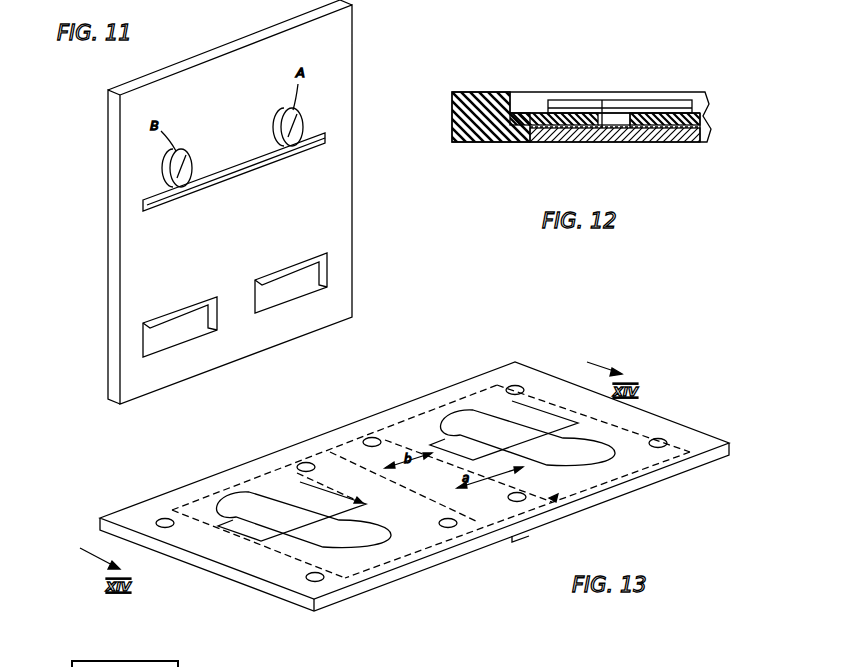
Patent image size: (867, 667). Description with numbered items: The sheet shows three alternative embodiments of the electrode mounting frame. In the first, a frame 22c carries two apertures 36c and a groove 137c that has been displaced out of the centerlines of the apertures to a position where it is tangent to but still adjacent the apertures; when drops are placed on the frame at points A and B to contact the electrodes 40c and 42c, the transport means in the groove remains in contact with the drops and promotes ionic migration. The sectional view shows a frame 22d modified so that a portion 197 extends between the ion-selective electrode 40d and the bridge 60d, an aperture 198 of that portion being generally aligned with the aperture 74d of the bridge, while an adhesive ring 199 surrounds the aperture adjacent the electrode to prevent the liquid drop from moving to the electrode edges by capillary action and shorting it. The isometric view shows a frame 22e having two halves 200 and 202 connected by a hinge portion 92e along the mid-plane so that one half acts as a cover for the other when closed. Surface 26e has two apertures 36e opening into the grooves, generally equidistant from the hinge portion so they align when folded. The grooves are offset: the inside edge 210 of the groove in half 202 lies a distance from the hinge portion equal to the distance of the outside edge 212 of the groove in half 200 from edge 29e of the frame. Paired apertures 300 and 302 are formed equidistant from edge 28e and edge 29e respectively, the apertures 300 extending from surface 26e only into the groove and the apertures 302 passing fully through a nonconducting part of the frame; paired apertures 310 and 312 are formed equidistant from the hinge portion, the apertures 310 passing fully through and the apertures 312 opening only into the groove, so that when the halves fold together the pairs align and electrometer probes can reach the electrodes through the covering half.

In FIG. 11, the frame 22c is at (126, 257).
In FIG. 11, the apertures 36c is at (275, 128).
In FIG. 11, the groove 137c is at (238, 168).
In FIG. 11, the electrode 40c is at (293, 285).
In FIG. 11, the electrode 42c is at (173, 328).
In FIG. 12, the frame 22d is at (575, 62).
In FIG. 12, the aperture 74d is at (630, 126).
In FIG. 12, the bridge 60d is at (658, 100).
In FIG. 12, the portion 197 is at (538, 143).
In FIG. 12, the aperture 198 is at (606, 127).
In FIG. 12, the ISE 40d is at (619, 133).
In FIG. 12, the adhesive ring 199 is at (678, 133).
In FIG. 13, the frame 22e is at (511, 354).
In FIG. 13, the half 200 is at (226, 468).
In FIG. 13, the half 202 is at (652, 471).
In FIG. 13, the surface 26e is at (357, 423).
In FIG. 13, the edge 28e is at (637, 408).
In FIG. 13, the edge 29e is at (263, 591).
In FIG. 13, the apertures 36e is at (277, 497).
In FIG. 13, the apertures 300 is at (521, 387).
In FIG. 13, the apertures 302 is at (162, 519).
In FIG. 13, the apertures 310 is at (374, 437).
In FIG. 13, the apertures 312 is at (303, 463).
In FIG. 13, the inside edge 210 is at (587, 532).
In FIG. 13, the outside edge 212 is at (330, 573).
In FIG. 13, the hinge portion 92e is at (526, 537).